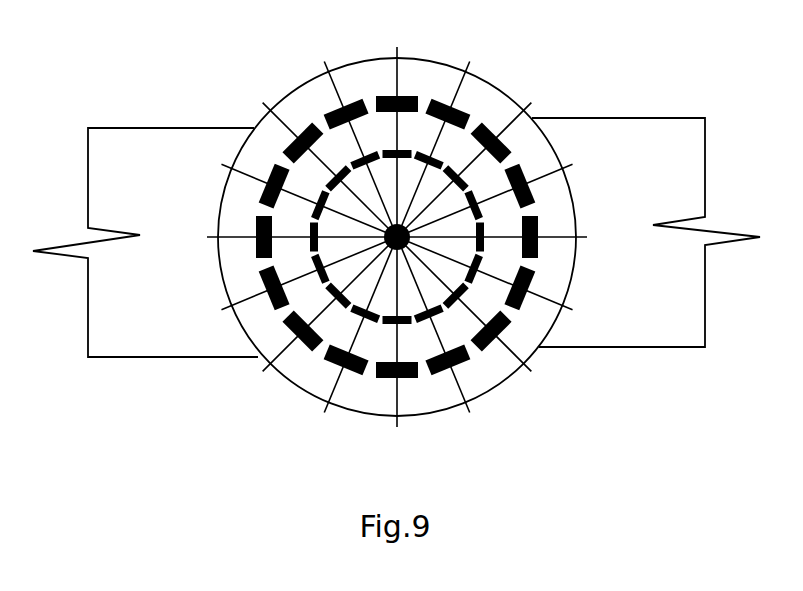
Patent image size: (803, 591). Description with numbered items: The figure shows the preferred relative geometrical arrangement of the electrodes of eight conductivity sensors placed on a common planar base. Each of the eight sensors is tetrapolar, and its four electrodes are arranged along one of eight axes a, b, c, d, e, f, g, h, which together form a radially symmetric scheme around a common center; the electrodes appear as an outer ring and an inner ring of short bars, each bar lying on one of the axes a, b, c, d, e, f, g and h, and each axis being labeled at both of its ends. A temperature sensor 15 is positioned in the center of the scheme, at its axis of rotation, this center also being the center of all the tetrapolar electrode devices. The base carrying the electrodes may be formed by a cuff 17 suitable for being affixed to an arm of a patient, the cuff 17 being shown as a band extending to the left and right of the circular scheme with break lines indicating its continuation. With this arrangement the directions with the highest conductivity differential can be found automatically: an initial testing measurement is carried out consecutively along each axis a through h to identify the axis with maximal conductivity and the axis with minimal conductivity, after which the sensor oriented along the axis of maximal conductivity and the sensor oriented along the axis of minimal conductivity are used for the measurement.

The temperature sensor 15 is at (395, 235).
The cuff 17 is at (160, 140).
The axis a is at (397, 238).
The axis b is at (397, 236).
The axis c is at (395, 243).
The axis d is at (393, 237).
The axis e is at (395, 237).
The axis f is at (397, 237).
The axis g is at (396, 236).
The axis h is at (397, 235).